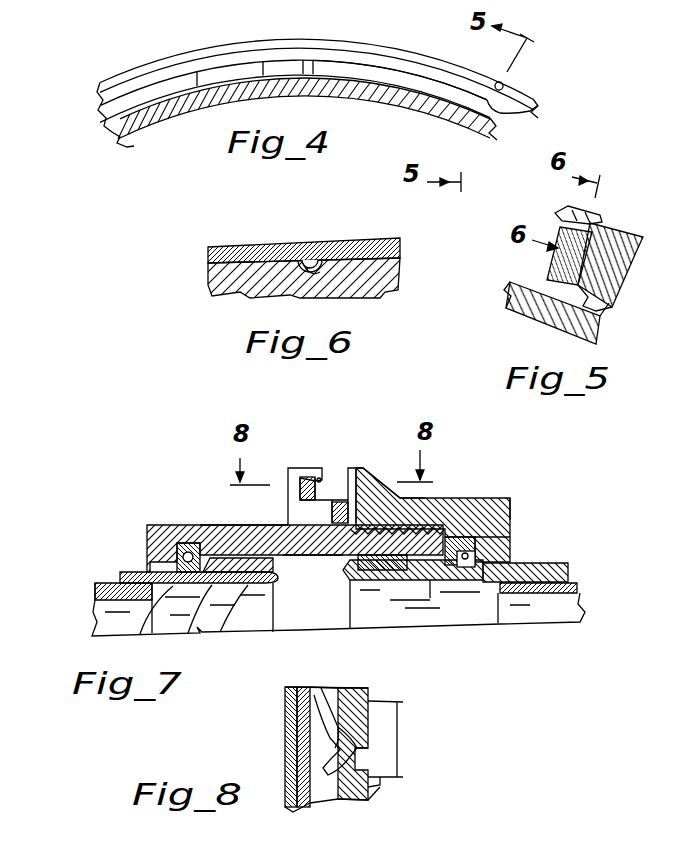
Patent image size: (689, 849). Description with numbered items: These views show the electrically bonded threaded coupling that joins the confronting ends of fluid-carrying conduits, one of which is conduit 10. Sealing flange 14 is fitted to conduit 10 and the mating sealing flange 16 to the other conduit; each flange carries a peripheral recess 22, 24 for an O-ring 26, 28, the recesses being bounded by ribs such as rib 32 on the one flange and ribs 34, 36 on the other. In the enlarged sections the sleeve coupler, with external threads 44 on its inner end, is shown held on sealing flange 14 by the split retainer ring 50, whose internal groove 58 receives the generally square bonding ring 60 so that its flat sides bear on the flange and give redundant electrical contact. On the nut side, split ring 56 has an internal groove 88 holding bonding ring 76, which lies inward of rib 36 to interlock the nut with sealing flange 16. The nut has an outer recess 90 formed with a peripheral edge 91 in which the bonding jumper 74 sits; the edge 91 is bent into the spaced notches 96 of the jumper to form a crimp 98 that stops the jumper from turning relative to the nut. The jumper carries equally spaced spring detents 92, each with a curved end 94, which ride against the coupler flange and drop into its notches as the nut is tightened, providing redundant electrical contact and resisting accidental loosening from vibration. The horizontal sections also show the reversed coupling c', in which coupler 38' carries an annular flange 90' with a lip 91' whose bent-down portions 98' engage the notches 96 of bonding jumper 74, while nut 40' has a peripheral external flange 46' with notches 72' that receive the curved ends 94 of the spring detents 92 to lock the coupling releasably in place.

In FIG. 7, the conduit 10 is at (95, 590).
In FIG. 7, the sealing flange 14 is at (97, 571).
In FIG. 7, the sealing flange 16 is at (557, 558).
In FIG. 7, the recess 22 is at (145, 642).
In FIG. 6, the recess 24 is at (227, 282).
In FIG. 7, the recess 24 is at (343, 588).
In FIG. 7, the O-ring 26 is at (190, 642).
In FIG. 7, the O-ring 28 is at (390, 581).
In FIG. 7, the peripheral rib 32 is at (238, 642).
In FIG. 7, the peripheral rib 34 is at (370, 558).
In FIG. 7, the peripheral rib 36 is at (432, 566).
In FIG. 7, the coupler 38' is at (264, 521).
In FIG. 8, the coupler 38' is at (258, 747).
In FIG. 7, the nut 40' is at (446, 492).
In FIG. 8, the nut 40' is at (419, 744).
In FIG. 4, the external threads 44 is at (339, 106).
In FIG. 7, the peripheral external flange 46' is at (412, 444).
In FIG. 8, the peripheral external flange 46' is at (387, 736).
In FIG. 7, the retainer ring 50 is at (200, 527).
In FIG. 7, the split ring 56 is at (477, 533).
In FIG. 7, the internal groove 58 is at (108, 640).
In FIG. 7, the bonding ring 60 is at (187, 560).
In FIG. 7, the notches 72' is at (392, 435).
In FIG. 8, the notches 72' is at (408, 740).
In FIG. 5, the bonding jumper 74 is at (547, 273).
In FIG. 7, the bonding jumper 74 is at (318, 477).
In FIG. 8, the bonding jumper 74 is at (285, 705).
In FIG. 7, the bonding ring 76 is at (512, 530).
In FIG. 7, the internal groove 88 is at (512, 563).
In FIG. 4, the recess 90 is at (212, 44).
In FIG. 7, the annular flange 90' is at (300, 484).
In FIG. 8, the annular flange 90' is at (266, 747).
In FIG. 4, the peripheral edge 91 is at (400, 52).
In FIG. 6, the peripheral edge 91 is at (304, 228).
In FIG. 5, the peripheral edge 91 is at (611, 242).
In FIG. 7, the lip 91' is at (296, 436).
In FIG. 7, the spring detents 92 is at (345, 567).
In FIG. 8, the spring detents 92 is at (322, 720).
In FIG. 4, the curved end 94 is at (290, 68).
In FIG. 7, the curved end 94 is at (350, 490).
In FIG. 8, the curved end 94 is at (380, 788).
In FIG. 4, the notches 96 is at (522, 112).
In FIG. 6, the notches 96 is at (318, 280).
In FIG. 5, the notches 96 is at (637, 279).
In FIG. 4, the crimp 98 is at (536, 64).
In FIG. 6, the crimp 98 is at (313, 232).
In FIG. 5, the crimp 98 is at (557, 200).
In FIG. 7, the bent down portions 98' is at (344, 463).
In FIG. 7, the coupling c' is at (157, 456).